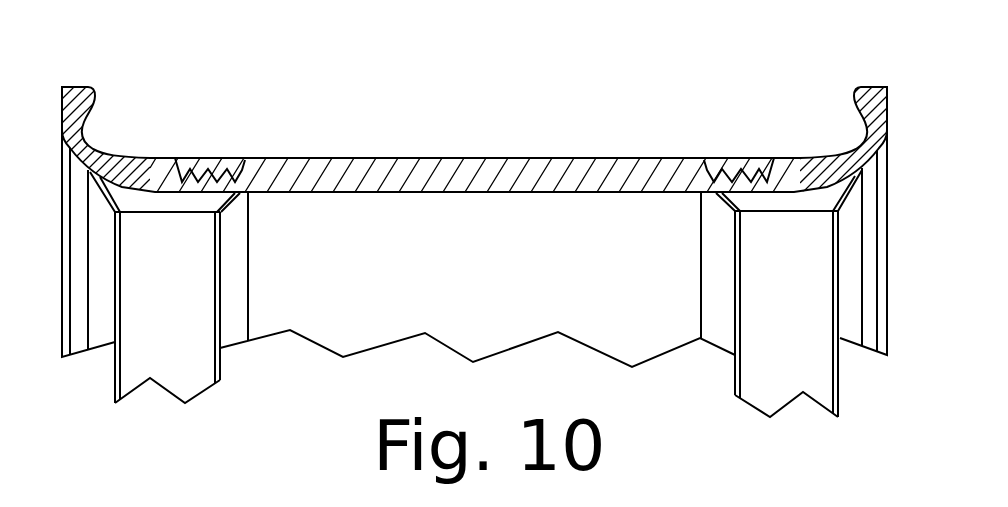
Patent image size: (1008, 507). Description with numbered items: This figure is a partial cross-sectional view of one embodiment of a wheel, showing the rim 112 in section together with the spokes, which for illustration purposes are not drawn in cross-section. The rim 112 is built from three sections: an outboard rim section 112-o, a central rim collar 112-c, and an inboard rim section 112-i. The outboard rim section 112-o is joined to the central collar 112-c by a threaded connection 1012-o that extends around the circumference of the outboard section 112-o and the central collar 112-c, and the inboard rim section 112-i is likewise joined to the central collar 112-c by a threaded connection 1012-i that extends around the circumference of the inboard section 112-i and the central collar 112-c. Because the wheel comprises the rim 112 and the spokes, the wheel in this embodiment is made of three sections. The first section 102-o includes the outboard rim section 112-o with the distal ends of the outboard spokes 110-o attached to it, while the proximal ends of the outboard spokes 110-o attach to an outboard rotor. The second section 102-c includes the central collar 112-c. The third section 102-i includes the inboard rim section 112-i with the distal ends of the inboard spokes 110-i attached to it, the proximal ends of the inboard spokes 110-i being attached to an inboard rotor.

The first section of the wheel 102-o is at (248, 143).
The second section of the wheel 102-c is at (248, 143).
The third section of the wheel 102-i is at (698, 143).
The rim 112 is at (474, 163).
The outboard rim section 112-o is at (90, 115).
The central rim collar 112-c is at (590, 193).
The inboard rim section 112-i is at (859, 115).
The threaded connection 1012-o is at (203, 168).
The threaded connection 1012-i is at (730, 165).
The outboard spokes 110-o is at (218, 363).
The inboard spokes 110-i is at (720, 377).